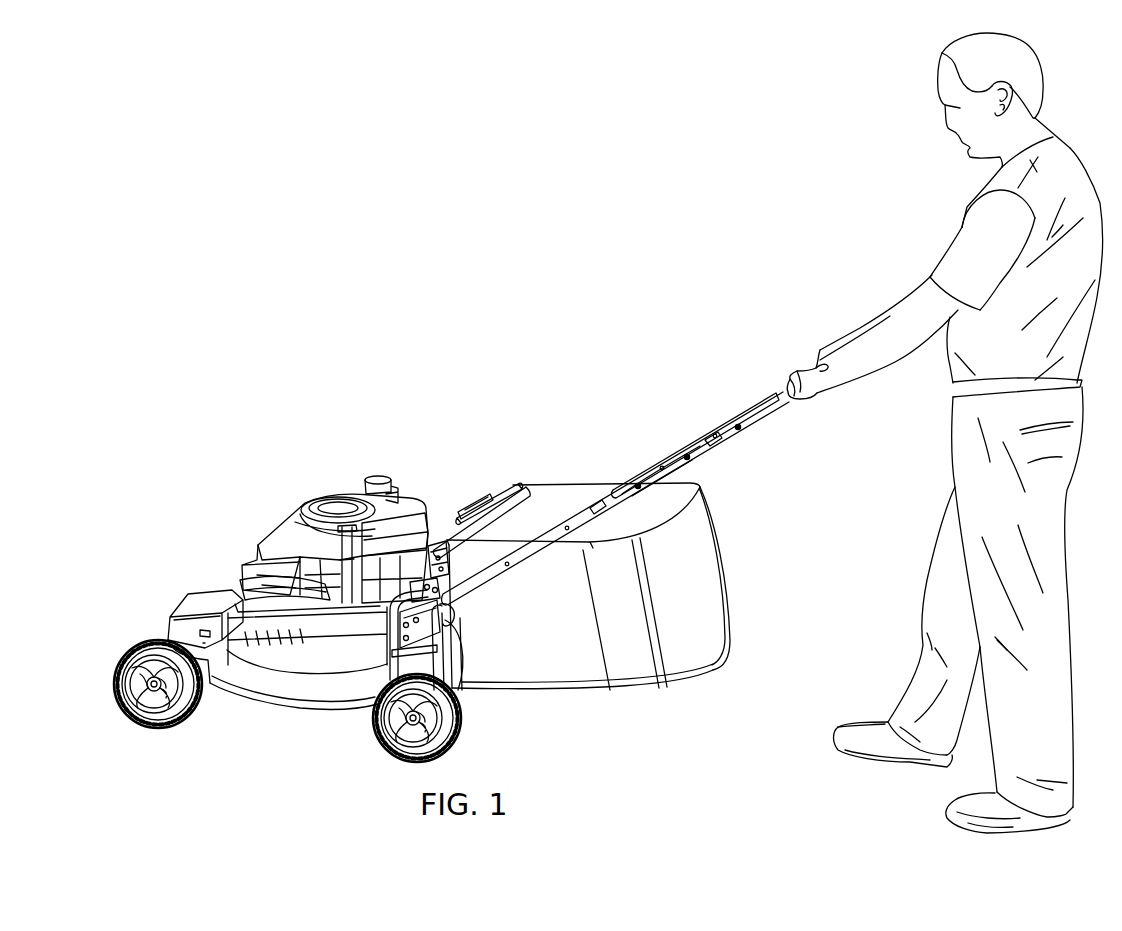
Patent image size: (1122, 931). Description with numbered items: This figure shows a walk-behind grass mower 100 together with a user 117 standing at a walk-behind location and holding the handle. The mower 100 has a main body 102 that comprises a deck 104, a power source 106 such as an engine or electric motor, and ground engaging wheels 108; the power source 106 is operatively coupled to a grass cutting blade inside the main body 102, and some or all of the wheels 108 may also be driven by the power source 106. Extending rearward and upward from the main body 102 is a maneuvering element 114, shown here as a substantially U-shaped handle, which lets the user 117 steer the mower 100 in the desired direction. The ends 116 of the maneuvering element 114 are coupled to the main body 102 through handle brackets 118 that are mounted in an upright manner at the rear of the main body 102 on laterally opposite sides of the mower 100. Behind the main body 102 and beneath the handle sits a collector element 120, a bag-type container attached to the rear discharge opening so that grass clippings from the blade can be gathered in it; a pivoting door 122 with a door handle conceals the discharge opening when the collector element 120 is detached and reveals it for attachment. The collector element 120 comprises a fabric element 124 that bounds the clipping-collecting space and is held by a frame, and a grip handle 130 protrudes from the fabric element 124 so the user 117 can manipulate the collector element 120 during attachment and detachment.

The grass mower 100 is at (592, 382).
The main body 102 is at (216, 524).
The deck 104 is at (278, 692).
The power source 106 is at (394, 503).
The ground engaging wheels 108 is at (458, 738).
The maneuvering element 114 is at (792, 398).
The ends 116 is at (446, 622).
The user 117 is at (966, 238).
The handle brackets 118 is at (398, 661).
The collector element 120 is at (766, 575).
The pivoting door 122 is at (434, 545).
The fabric element 124 is at (692, 660).
The grip handle 130 is at (523, 490).